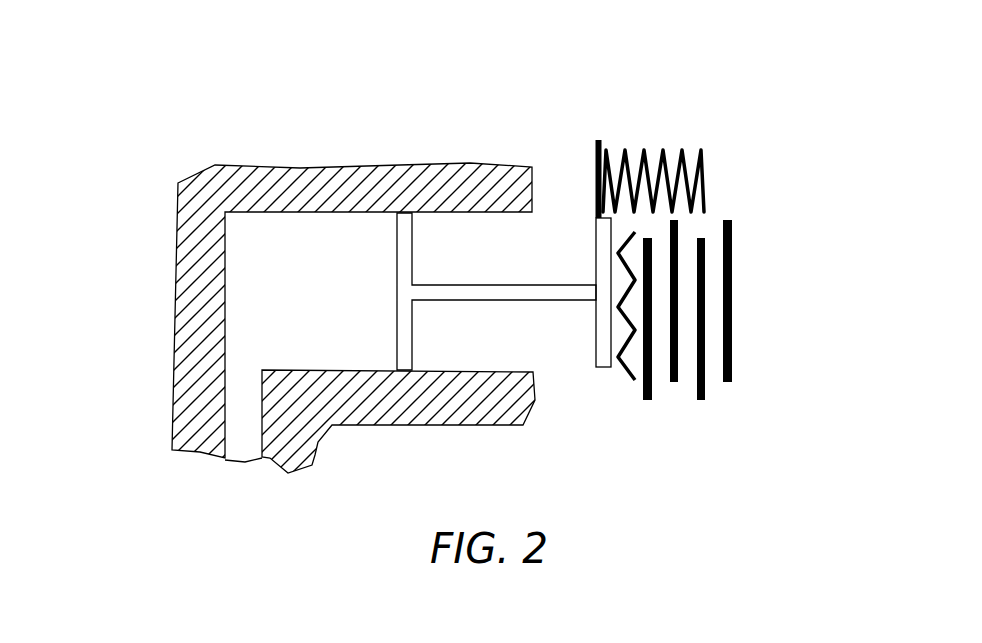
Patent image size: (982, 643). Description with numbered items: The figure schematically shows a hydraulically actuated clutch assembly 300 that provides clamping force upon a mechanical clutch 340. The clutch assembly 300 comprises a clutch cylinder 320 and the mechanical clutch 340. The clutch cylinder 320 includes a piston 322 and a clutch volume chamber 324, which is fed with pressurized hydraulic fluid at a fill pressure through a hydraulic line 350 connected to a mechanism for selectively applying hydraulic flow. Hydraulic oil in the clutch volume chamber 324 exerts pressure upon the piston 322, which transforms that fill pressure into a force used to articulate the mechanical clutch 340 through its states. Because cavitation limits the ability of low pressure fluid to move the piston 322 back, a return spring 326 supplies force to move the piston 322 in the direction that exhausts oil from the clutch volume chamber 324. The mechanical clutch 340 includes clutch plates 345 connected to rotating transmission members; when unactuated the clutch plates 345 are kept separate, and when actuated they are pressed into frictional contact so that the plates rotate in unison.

The clutch assembly 300 is at (204, 84).
The clutch volume chamber 324 is at (253, 262).
The hydraulic line 350 is at (243, 414).
The piston 322 is at (413, 258).
The clutch cylinder 320 is at (278, 215).
The return spring 326 is at (658, 150).
The clutch plates 345 is at (652, 268).
The mechanical clutch 340 is at (700, 393).